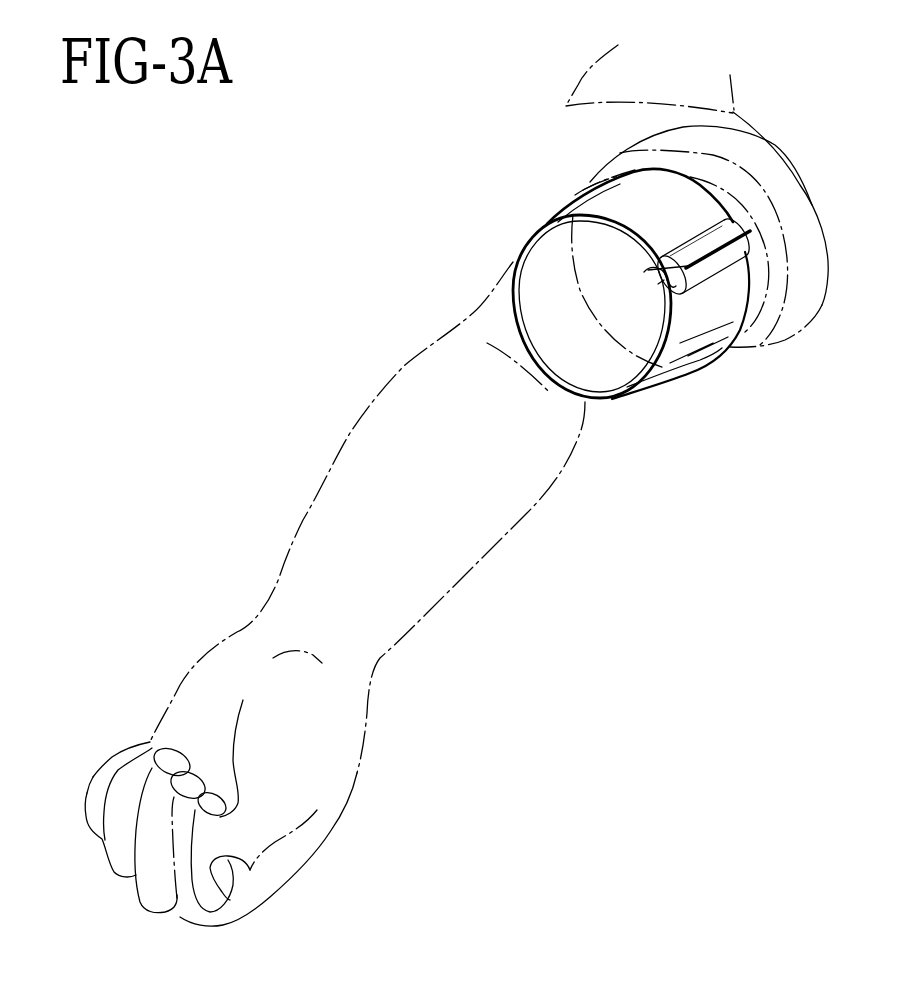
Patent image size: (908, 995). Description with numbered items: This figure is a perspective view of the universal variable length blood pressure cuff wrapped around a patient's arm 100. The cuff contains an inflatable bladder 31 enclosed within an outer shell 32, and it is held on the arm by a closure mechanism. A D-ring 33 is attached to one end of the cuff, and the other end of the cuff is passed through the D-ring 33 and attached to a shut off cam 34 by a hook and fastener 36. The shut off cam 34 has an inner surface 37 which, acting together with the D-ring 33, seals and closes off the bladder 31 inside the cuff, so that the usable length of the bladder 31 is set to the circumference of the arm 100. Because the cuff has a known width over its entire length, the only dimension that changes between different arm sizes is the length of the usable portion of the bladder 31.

The arm of user 100 is at (307, 512).
The bladder 31 is at (528, 236).
The outer shell 32 is at (590, 398).
The D-ring 33 is at (657, 262).
The shut off cam 34 is at (725, 227).
The fastener 36 is at (748, 230).
The inner surface 37 is at (655, 286).